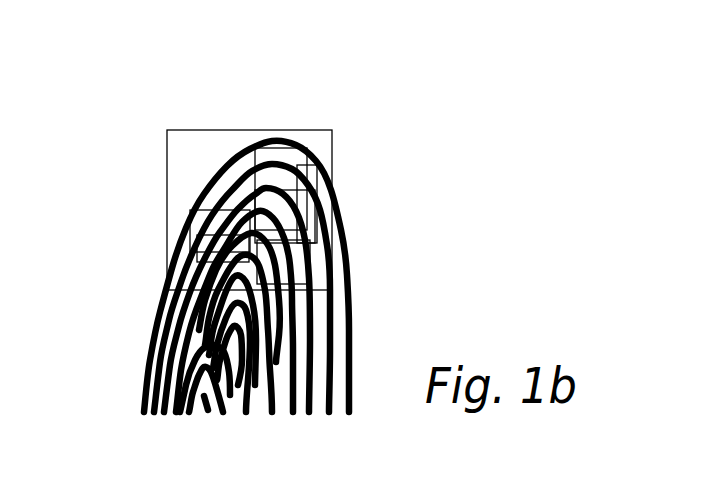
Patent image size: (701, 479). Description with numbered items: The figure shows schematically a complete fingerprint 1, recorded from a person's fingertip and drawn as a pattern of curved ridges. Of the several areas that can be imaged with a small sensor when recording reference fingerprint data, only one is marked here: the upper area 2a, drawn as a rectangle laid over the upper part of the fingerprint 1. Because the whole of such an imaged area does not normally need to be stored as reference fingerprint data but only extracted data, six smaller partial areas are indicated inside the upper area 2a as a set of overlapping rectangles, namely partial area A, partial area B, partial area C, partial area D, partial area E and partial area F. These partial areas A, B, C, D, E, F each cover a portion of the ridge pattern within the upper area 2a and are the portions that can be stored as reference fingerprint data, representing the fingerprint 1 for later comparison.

The fingerprint 1 is at (393, 147).
The upper area 2a is at (189, 130).
The partial area A is at (314, 262).
The partial area B is at (317, 214).
The partial area C is at (312, 162).
The partial area D is at (228, 158).
The partial area E is at (187, 198).
The partial area F is at (183, 245).